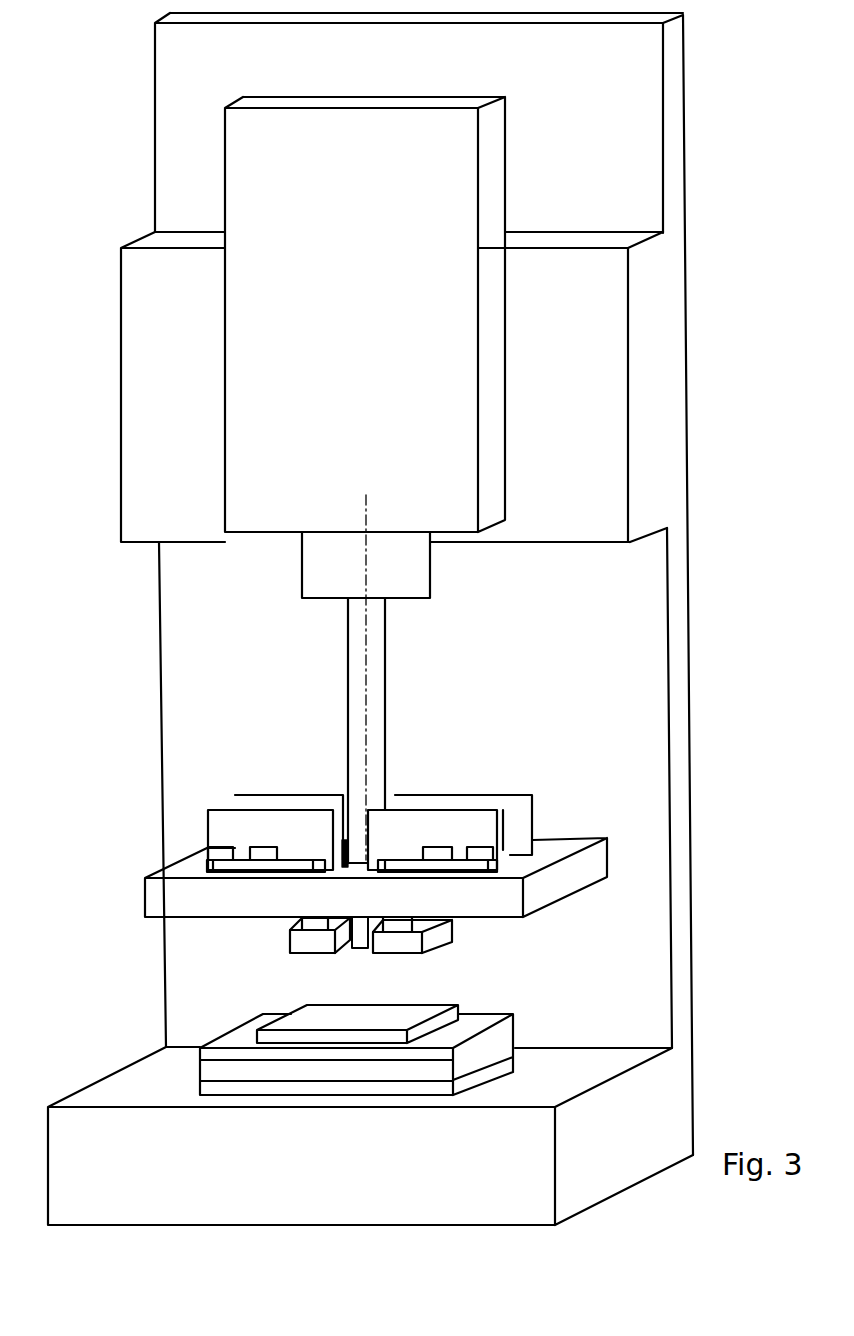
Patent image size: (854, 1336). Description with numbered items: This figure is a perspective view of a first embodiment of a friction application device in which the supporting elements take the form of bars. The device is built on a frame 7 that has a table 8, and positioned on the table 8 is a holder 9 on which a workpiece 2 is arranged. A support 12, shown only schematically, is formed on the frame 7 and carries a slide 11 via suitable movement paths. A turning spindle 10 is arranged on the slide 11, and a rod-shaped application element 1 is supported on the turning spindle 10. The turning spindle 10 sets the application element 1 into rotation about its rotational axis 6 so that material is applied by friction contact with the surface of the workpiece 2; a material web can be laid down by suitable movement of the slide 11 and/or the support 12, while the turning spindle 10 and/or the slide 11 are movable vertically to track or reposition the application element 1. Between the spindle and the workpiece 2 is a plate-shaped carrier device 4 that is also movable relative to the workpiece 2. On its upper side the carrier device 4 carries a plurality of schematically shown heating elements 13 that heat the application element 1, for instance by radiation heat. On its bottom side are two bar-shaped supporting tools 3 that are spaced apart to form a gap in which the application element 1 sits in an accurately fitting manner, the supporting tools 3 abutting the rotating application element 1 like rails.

The application element 1 is at (372, 722).
The workpiece 2 is at (412, 1020).
The supporting tools 3 is at (303, 942).
The carrier device 4 is at (147, 894).
The rotational axis 6 is at (366, 510).
The frame 7 is at (655, 682).
The table 8 is at (590, 1063).
The holder 9 is at (500, 1037).
The turning spindle 10 is at (350, 577).
The slide 11 is at (242, 362).
The support 12 is at (600, 388).
The heating elements 13 is at (450, 825).